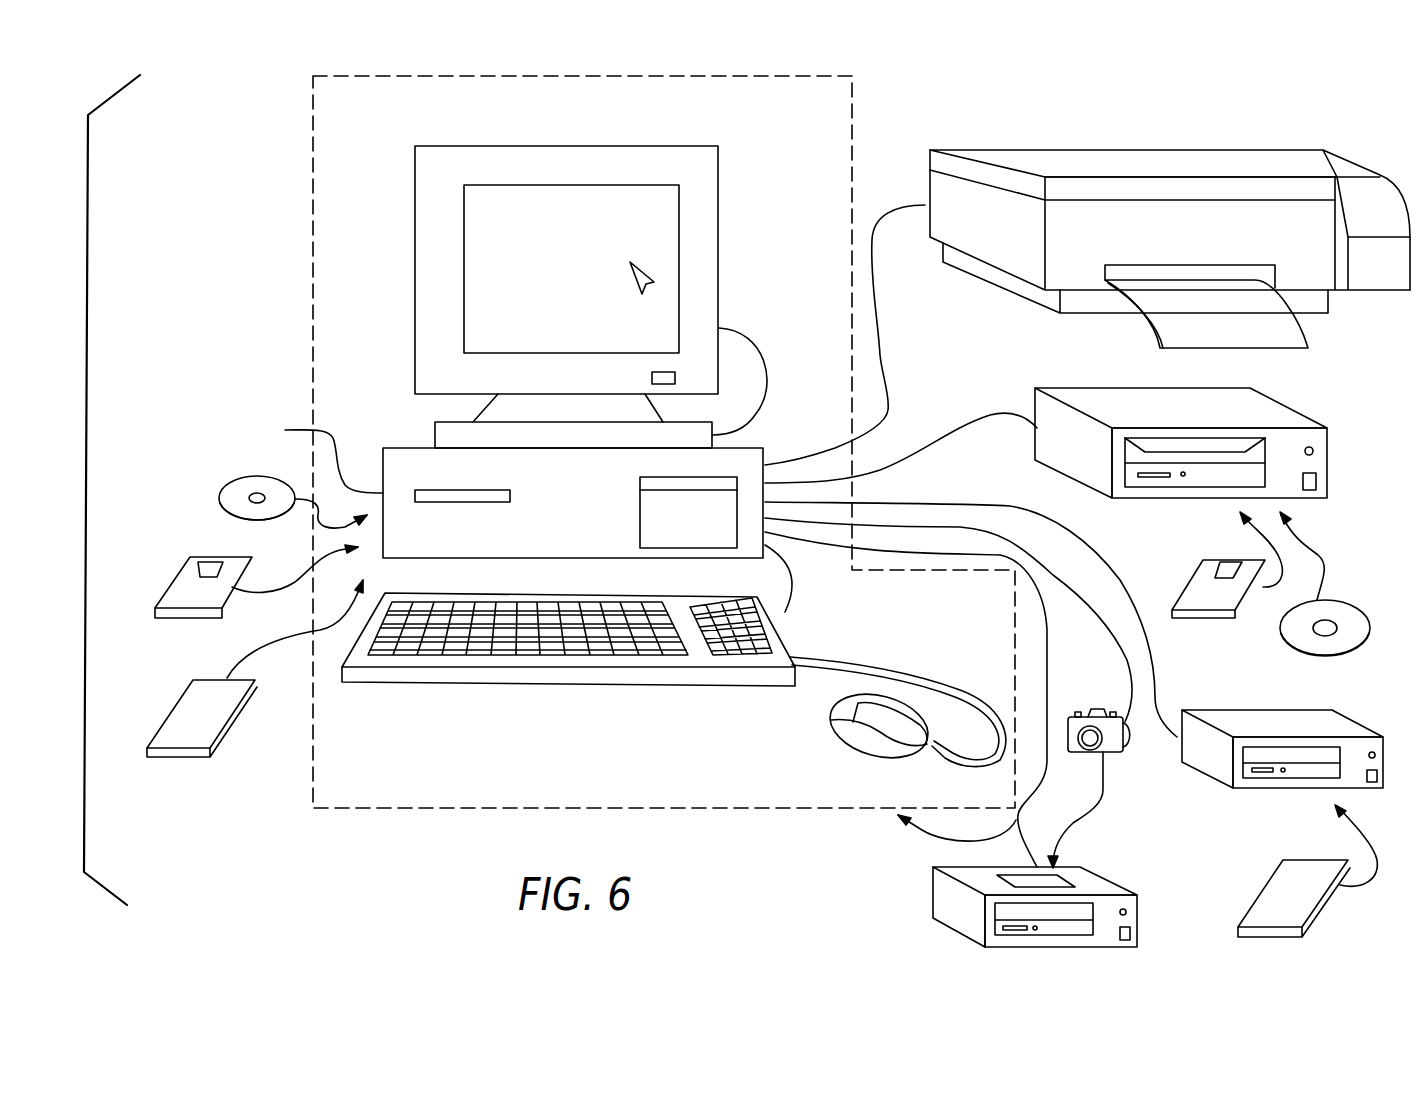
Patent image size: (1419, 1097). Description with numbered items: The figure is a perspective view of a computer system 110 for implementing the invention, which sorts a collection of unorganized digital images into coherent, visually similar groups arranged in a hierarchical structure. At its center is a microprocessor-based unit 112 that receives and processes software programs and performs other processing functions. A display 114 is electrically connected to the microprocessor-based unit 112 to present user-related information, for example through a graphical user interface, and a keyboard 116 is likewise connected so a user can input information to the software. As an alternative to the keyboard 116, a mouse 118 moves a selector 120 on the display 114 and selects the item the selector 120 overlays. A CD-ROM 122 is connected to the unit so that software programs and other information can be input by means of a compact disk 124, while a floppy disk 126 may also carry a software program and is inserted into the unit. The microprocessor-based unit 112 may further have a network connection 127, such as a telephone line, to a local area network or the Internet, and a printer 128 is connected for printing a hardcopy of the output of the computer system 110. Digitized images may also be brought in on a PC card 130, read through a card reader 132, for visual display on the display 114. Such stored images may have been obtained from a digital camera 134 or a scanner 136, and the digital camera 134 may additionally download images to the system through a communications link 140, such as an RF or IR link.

The computer system 110 is at (851, 101).
The microprocessor-based unit 112 is at (408, 448).
The display 114 is at (539, 146).
The keyboard 116 is at (577, 685).
The mouse 118 is at (866, 755).
The selector 120 is at (652, 272).
The CD-ROM 122 is at (1072, 396).
The compact disk 124 is at (237, 480).
The floppy disk 126 is at (180, 575).
The network connection 127 is at (310, 453).
The printer 128 is at (1130, 150).
The PC card 130 is at (183, 693).
The card reader 132 is at (1230, 717).
The digital camera 134 is at (1102, 712).
The scanner 136 is at (947, 903).
The communications link 140 is at (950, 843).